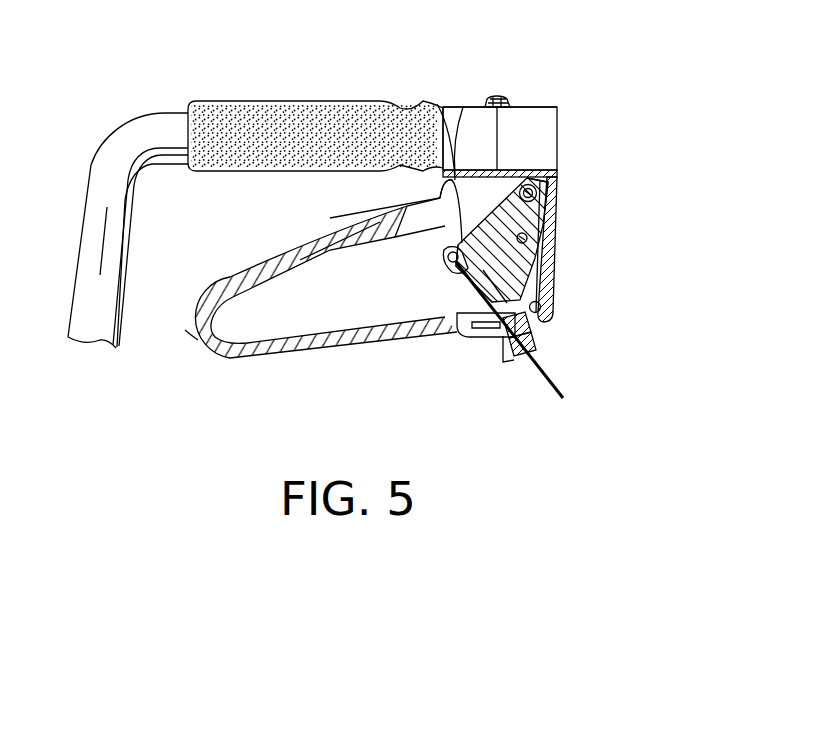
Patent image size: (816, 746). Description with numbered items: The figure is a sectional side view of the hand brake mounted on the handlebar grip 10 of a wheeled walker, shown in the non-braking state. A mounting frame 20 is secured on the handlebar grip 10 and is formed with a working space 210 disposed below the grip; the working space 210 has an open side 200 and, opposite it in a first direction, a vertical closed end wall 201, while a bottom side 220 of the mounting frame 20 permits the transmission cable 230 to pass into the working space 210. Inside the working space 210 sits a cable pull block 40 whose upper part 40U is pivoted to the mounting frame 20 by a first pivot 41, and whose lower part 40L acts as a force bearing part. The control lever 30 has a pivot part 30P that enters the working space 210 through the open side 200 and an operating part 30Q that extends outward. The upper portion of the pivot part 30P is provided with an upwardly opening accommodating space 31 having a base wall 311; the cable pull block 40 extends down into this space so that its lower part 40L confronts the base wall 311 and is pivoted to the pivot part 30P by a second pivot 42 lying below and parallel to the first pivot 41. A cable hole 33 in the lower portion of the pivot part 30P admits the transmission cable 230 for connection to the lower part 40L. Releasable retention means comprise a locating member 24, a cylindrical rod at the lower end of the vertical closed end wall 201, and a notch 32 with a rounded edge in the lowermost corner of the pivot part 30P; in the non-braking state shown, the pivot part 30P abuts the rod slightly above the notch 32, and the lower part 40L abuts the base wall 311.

The handlebar grip 10 is at (260, 113).
The mounting frame 20 is at (567, 226).
The locating member 24 is at (558, 297).
The control lever 30 is at (252, 360).
The pivot part 30P is at (498, 96).
The operating part 30Q is at (182, 330).
The accommodating space 31 is at (420, 224).
The notch 32 is at (533, 333).
The cable hole 33 is at (457, 331).
The cable pull block 40 is at (555, 192).
The lower part 40L is at (437, 104).
The upper part 40U is at (563, 183).
The first pivot 41 is at (532, 187).
The second pivot 42 is at (527, 238).
The open side 200 is at (443, 185).
The vertical closed end wall 201 is at (557, 273).
The working space 210 is at (463, 107).
The bottom side 220 is at (503, 363).
The transmission cable 230 is at (557, 390).
The base wall 311 is at (452, 312).